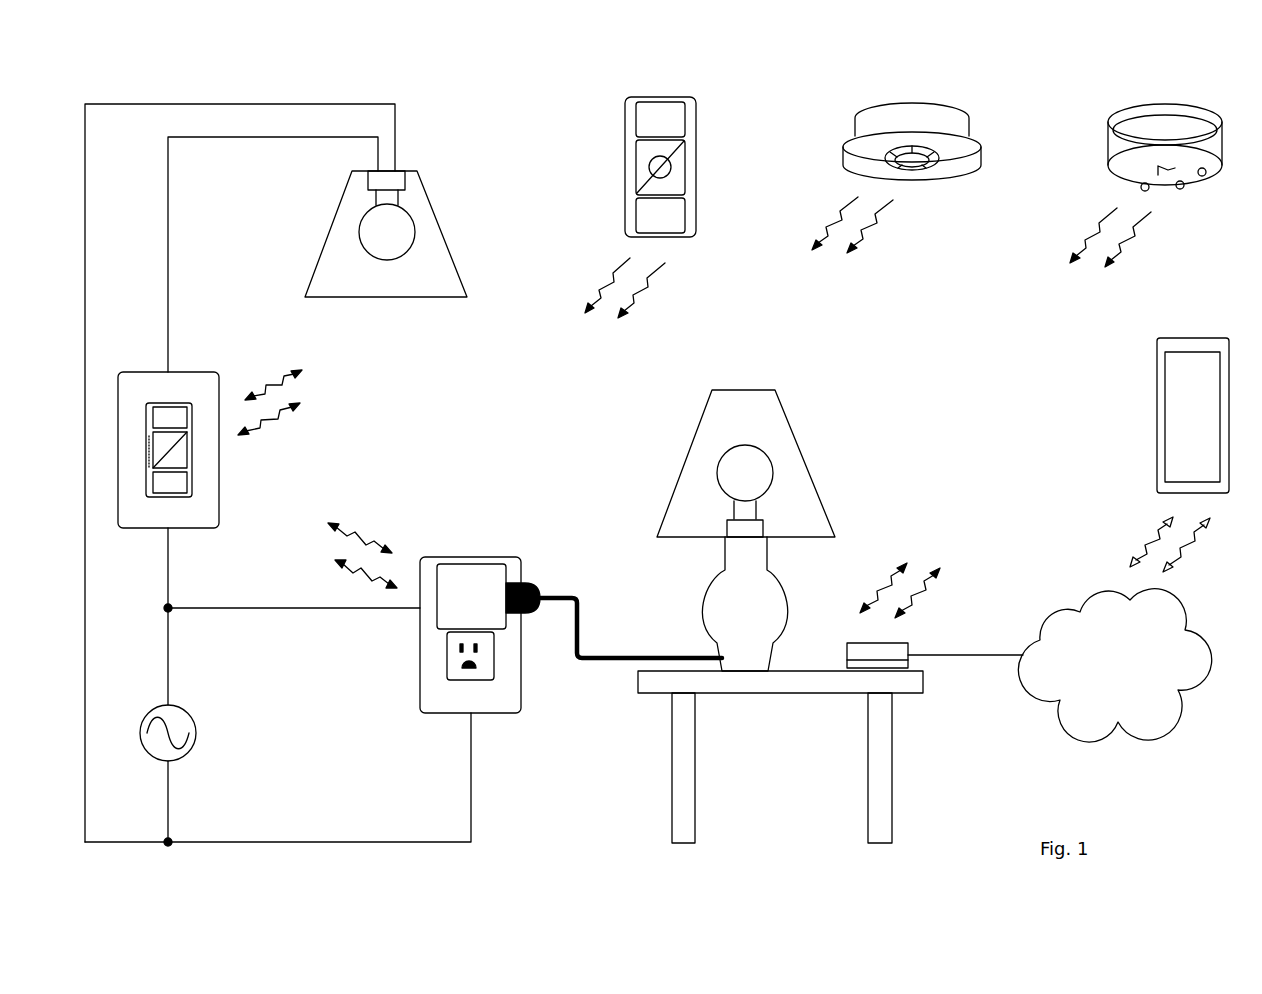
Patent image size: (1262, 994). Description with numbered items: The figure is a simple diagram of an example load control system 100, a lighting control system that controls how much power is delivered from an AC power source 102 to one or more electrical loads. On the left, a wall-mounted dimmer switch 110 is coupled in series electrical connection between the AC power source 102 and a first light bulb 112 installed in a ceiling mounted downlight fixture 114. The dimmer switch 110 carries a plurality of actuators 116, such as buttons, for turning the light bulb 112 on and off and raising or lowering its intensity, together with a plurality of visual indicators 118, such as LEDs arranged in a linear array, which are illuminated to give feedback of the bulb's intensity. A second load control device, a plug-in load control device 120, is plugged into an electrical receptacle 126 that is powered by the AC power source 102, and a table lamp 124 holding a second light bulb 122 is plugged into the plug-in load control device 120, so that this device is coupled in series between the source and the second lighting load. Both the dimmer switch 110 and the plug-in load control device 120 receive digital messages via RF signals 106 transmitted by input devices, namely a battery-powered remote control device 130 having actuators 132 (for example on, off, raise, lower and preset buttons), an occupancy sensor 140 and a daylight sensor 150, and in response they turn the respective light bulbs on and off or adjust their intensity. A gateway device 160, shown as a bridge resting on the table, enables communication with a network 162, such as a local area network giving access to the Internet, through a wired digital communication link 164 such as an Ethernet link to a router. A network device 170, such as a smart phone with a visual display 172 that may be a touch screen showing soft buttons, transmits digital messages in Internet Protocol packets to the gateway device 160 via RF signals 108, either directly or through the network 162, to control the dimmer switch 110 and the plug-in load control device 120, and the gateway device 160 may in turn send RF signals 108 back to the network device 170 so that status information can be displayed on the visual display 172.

The load control system 100 is at (229, 43).
The AC power source 102 is at (187, 722).
The RF signals 106 is at (368, 503).
The RF signals 108 is at (1133, 521).
The wall-mounted dimmer switch 110 is at (194, 380).
The first light bulb 112 is at (386, 224).
The ceiling mounted downlight fixture 114 is at (337, 217).
The actuators 116 is at (178, 482).
The visual indicators 118 is at (125, 457).
The plug-in load control device 120 is at (487, 575).
The second light bulb 122 is at (740, 473).
The table lamp 124 is at (780, 690).
The electrical receptacle 126 is at (483, 690).
The battery-powered remote control device 130 is at (602, 162).
The actuators 132 is at (665, 222).
The occupancy sensor 140 is at (920, 112).
The daylight sensor 150 is at (1213, 170).
The gateway device 160 is at (926, 627).
The network 162 is at (1114, 665).
The wired digital communication link 164 is at (973, 655).
The network device 170 is at (1193, 338).
The visual display 172 is at (1193, 422).